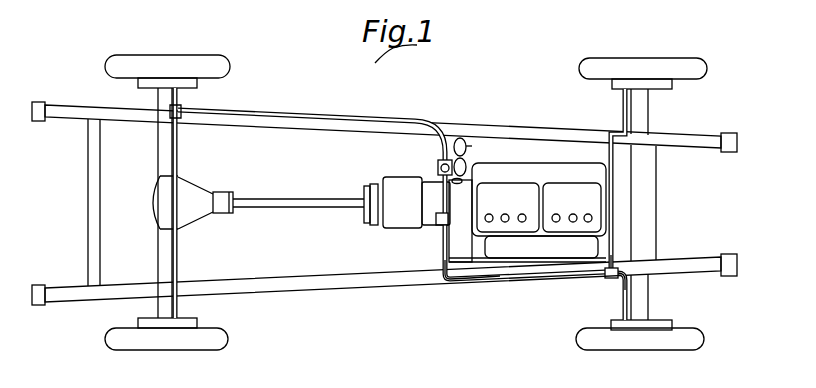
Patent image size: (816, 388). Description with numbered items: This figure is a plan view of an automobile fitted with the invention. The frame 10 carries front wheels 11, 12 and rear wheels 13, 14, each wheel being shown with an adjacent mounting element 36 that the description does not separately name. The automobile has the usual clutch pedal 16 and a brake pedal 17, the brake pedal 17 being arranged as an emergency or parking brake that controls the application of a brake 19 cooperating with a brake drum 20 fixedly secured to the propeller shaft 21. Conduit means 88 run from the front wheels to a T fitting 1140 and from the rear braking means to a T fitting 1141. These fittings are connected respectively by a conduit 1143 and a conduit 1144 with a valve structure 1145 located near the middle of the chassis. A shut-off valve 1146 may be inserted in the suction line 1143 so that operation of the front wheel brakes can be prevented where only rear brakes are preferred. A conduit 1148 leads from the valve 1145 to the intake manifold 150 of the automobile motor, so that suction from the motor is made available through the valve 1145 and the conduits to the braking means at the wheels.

The frame 10 is at (457, 122).
The front wheel 11 is at (587, 72).
The front wheel 12 is at (691, 338).
The rear wheel 13 is at (230, 68).
The rear wheel 14 is at (230, 338).
The wheel hub 36 is at (197, 82).
The conduit means 88 is at (178, 97).
The clutch pedal 16 is at (472, 142).
The brake pedal 17 is at (470, 163).
The brake 19 is at (366, 225).
The brake drum 20 is at (364, 218).
The propeller shaft 21 is at (253, 204).
The T fitting 1141 is at (182, 123).
The conduit 1144 is at (284, 123).
The valve structure 1145 is at (437, 163).
The shut-off valve 1146 is at (439, 235).
The conduit 1148 is at (455, 281).
The conduit 1143 is at (482, 280).
The intake manifold 150 is at (609, 276).
The T fitting 1140 is at (606, 279).